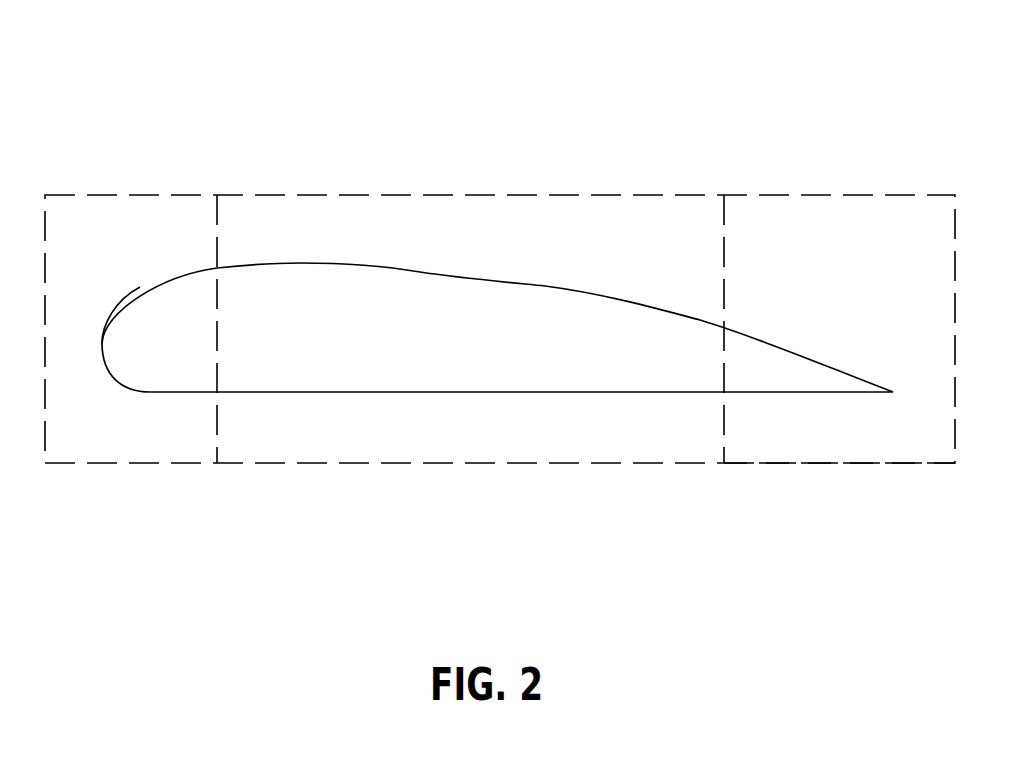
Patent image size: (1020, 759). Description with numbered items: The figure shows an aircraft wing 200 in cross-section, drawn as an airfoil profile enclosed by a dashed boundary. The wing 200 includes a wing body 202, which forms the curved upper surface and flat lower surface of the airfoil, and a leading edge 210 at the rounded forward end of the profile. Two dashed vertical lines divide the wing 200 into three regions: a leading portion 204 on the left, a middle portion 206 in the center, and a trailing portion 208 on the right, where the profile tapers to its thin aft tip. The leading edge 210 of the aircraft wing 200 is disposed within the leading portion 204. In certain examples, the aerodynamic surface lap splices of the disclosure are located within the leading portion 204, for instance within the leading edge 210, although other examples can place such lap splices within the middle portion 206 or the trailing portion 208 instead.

The aircraft wing 200 is at (207, 103).
The wing body 202 is at (545, 286).
The leading portion 204 is at (138, 464).
The middle portion 206 is at (523, 466).
The trailing portion 208 is at (857, 466).
The leading edge 210 is at (103, 328).